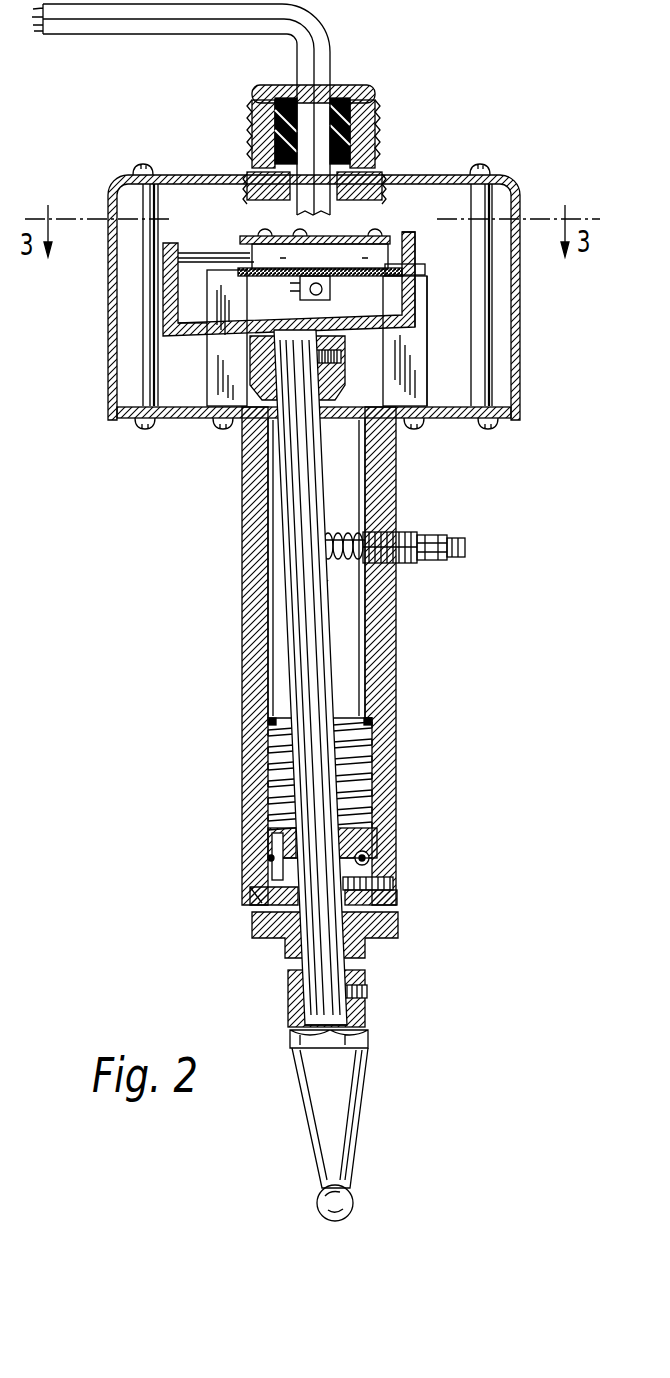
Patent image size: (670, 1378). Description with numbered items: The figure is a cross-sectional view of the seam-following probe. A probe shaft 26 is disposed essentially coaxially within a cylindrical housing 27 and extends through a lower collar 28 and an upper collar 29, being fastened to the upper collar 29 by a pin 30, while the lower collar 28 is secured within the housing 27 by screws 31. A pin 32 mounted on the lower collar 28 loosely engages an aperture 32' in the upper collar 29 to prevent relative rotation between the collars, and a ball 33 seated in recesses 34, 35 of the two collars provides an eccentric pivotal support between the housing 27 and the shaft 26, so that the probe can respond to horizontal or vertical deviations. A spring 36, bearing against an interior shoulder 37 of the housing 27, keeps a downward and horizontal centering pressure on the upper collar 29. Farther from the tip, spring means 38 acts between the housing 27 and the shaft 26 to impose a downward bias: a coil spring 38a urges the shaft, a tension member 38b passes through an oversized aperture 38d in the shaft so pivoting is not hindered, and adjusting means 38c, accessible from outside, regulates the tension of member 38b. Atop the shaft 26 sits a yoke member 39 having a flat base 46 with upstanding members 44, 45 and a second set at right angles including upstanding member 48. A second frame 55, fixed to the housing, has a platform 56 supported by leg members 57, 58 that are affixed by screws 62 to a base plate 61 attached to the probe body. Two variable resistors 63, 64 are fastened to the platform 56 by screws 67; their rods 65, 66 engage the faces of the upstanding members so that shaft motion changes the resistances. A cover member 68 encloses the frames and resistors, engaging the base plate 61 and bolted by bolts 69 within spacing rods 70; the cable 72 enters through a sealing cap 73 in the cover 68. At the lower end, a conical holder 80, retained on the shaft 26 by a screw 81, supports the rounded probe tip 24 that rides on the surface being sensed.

The probe tip 24 is at (355, 1202).
The probe shaft 26 is at (350, 612).
The housing 27 is at (397, 650).
The lower collar 28 is at (280, 887).
The upper collar 29 is at (266, 857).
The pin 30 is at (325, 847).
The screws 31 is at (398, 890).
The pin 32 is at (237, 861).
The aperture 32' is at (240, 825).
The ball 33 is at (370, 858).
The recess 34 is at (380, 880).
The recess 35 is at (372, 840).
The spring 36 is at (378, 764).
The interior shoulder 37 is at (375, 718).
The spring means 38 is at (352, 520).
The coil spring 38a is at (365, 535).
The tension member 38b is at (400, 562).
The adjusting means 38c is at (465, 546).
The aperture 38d is at (339, 567).
The yoke member 39 is at (200, 347).
The upstanding member 44 is at (163, 263).
The upstanding member 45 is at (415, 258).
The base 46 is at (317, 368).
The upstanding member 48 is at (346, 352).
The second frame 55 is at (447, 395).
The platform 56 is at (418, 288).
The leg member 57 is at (208, 384).
The leg member 58 is at (428, 350).
The base plate 61 is at (190, 428).
The screws 62 is at (415, 430).
The variable resistor 63 is at (352, 238).
The variable resistor 64 is at (332, 288).
The rod 65 is at (215, 253).
The rod 66 is at (305, 275).
The screws 67 is at (305, 236).
The cover member 68 is at (112, 398).
The bolts 69 is at (140, 430).
The spacing rods 70 is at (143, 356).
The cable 72 is at (195, 36).
The sealing cap 73 is at (248, 125).
The holder 80 is at (368, 1090).
The screw 81 is at (365, 998).